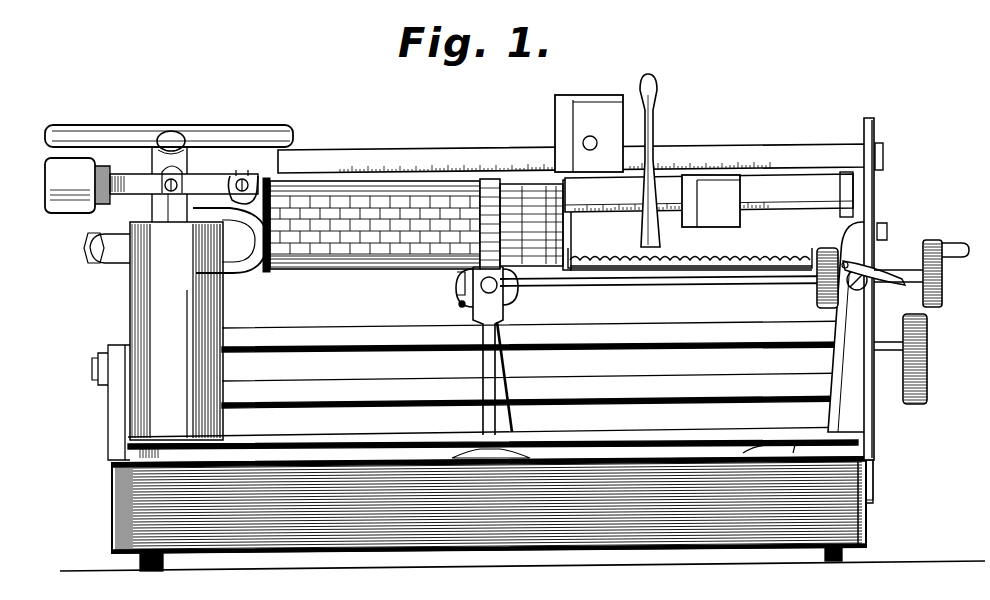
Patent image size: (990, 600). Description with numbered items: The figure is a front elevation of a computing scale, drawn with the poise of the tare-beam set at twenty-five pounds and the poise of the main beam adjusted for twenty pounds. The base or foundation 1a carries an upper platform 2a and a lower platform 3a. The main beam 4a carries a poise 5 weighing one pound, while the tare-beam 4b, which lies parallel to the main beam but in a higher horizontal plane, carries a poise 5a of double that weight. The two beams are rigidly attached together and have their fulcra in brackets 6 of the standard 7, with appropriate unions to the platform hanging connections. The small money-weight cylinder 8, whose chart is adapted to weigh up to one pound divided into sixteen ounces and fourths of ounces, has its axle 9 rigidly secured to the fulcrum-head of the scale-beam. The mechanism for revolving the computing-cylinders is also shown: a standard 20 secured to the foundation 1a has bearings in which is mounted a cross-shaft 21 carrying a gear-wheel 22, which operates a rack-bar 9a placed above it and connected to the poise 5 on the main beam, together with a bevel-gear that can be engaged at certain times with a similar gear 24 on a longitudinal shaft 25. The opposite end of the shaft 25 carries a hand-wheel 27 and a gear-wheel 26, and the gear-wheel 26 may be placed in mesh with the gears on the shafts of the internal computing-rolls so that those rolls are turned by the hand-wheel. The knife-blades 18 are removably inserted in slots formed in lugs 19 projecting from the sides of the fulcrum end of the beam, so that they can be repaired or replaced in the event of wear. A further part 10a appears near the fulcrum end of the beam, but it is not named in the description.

The base or foundation 1a is at (115, 524).
The upper platform 2a is at (160, 127).
The lower platform 3a is at (420, 437).
The main beam 4a is at (709, 194).
The tare-beam 4b is at (580, 158).
The poise 5 is at (711, 201).
The poise 5a is at (589, 133).
The brackets 6 is at (246, 254).
The standard 7 is at (153, 341).
The small money-weight cylinder 8 is at (392, 256).
The axle 9 is at (572, 225).
The rack-bar 9a is at (686, 262).
The clamp arm 10a is at (184, 176).
The knife-blades 18 is at (164, 186).
The lugs 19 is at (150, 202).
The standard 20 is at (507, 360).
The cross-shaft 21 is at (497, 290).
The gear-wheel 22 is at (470, 292).
The gear 24 is at (458, 306).
The longitudinal shaft 25 is at (596, 287).
The gear-wheel 26 is at (815, 298).
The hand-wheel 27 is at (936, 322).